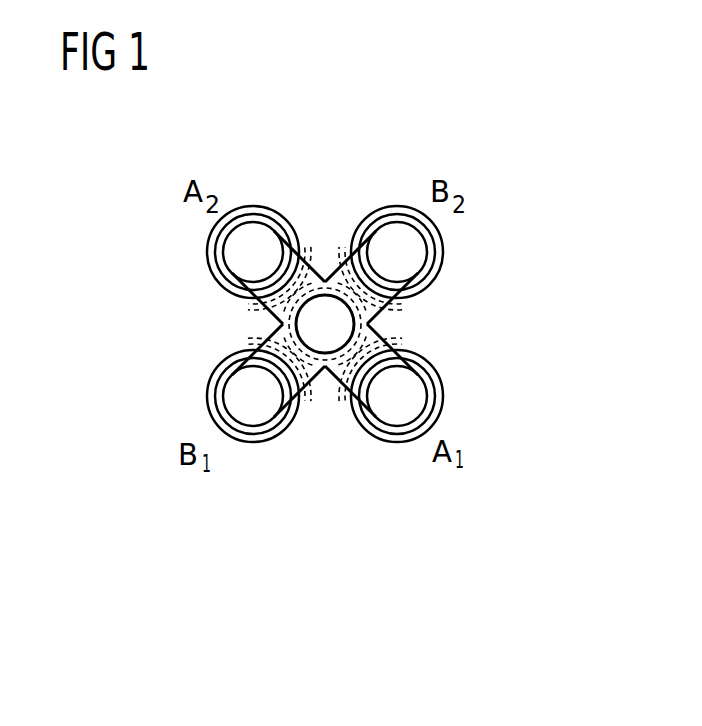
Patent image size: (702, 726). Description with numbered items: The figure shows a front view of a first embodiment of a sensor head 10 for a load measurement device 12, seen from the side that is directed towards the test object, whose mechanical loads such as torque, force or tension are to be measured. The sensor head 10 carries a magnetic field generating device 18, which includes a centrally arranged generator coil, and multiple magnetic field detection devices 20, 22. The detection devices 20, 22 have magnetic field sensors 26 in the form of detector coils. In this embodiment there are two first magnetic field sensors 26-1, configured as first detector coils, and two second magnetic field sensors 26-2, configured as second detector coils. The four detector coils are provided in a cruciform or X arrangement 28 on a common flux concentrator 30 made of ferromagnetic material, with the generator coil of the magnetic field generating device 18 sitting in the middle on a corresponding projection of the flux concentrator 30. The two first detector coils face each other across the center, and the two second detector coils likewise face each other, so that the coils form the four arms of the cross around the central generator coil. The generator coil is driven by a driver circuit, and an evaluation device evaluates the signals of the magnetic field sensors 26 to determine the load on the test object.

The sensor head 10 is at (139, 338).
The load measurement device 12 is at (226, 547).
The magnetic field generating device 18 is at (368, 321).
The magnetic field detection device 20 is at (226, 182).
The magnetic field detection device 22 is at (172, 274).
The magnetic field sensor 26 is at (265, 172).
The first magnetic field sensor 26-1 is at (182, 240).
The second magnetic field sensor 26-2 is at (463, 241).
The X arrangement 28 is at (405, 172).
The flux concentrator 30 is at (258, 345).